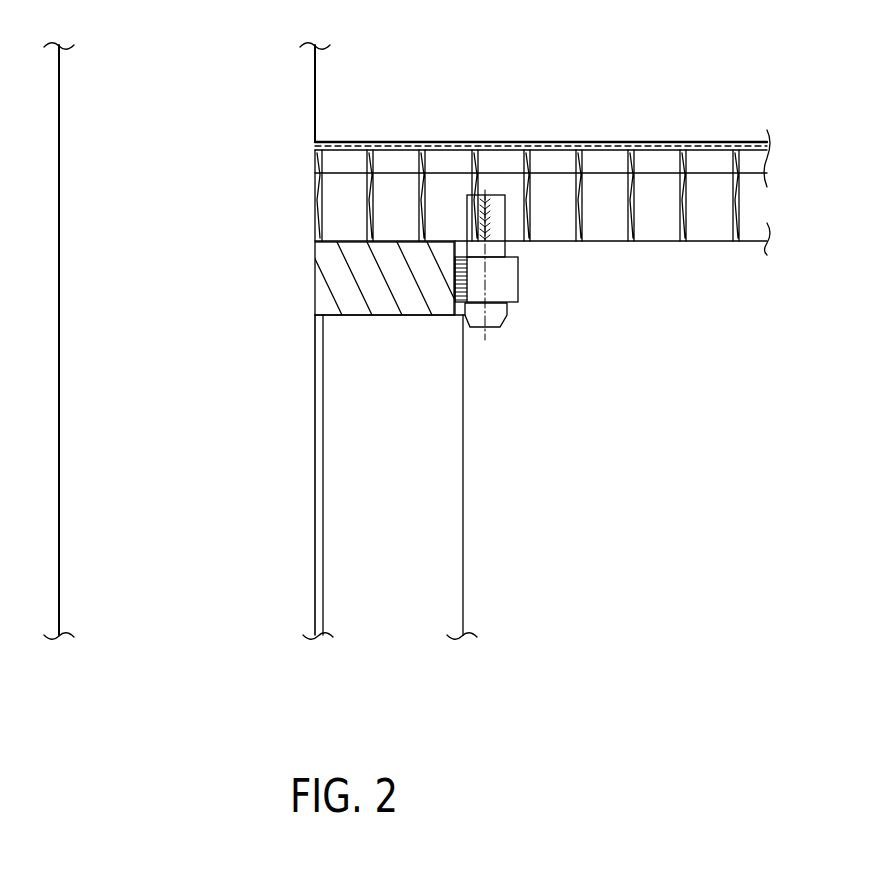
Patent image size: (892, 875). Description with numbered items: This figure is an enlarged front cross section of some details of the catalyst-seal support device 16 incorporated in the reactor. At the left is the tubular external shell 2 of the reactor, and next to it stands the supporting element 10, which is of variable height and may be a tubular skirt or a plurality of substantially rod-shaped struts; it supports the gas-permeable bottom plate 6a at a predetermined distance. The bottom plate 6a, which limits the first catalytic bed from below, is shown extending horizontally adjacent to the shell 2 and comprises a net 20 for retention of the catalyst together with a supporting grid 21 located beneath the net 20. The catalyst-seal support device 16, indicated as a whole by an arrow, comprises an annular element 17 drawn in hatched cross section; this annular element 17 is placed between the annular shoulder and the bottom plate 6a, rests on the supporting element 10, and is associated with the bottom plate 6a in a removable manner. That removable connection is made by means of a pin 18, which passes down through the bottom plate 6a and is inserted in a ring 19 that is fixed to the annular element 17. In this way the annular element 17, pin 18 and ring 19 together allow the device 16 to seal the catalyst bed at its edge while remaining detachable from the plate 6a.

The tubular external shell 2 is at (84, 548).
The supporting element 10 is at (447, 465).
The gas-permeable bottom plate 6a is at (553, 148).
The net 20 is at (708, 141).
The supporting grid 21 is at (684, 213).
The catalyst-seal support device 16 is at (648, 402).
The annular element 17 is at (410, 300).
The pin 18 is at (502, 252).
The ring 19 is at (509, 280).